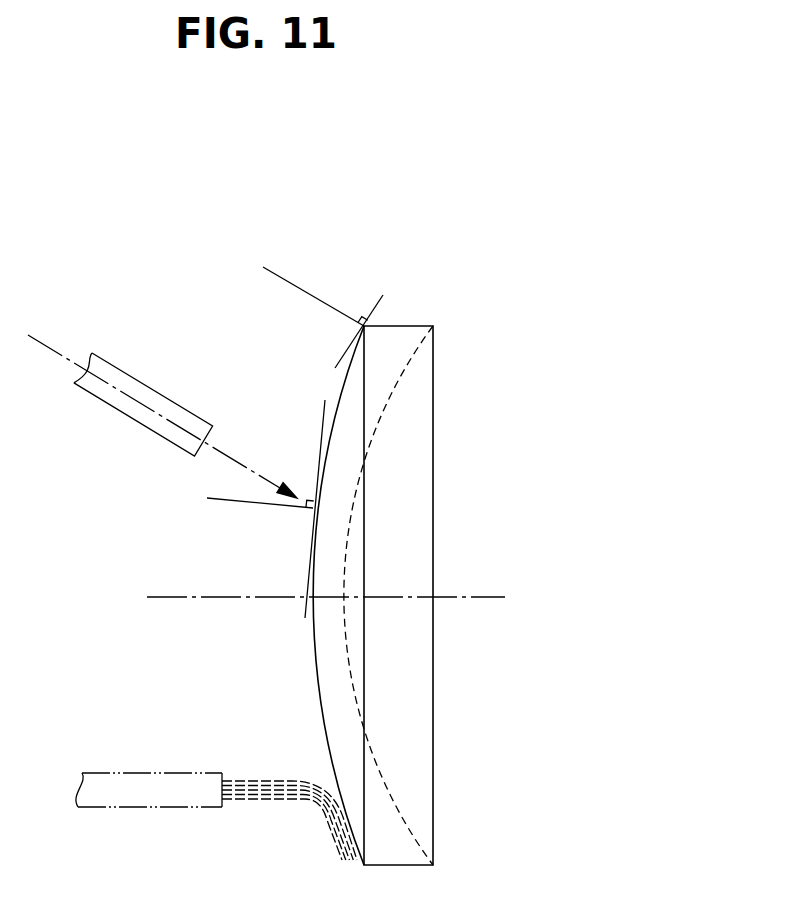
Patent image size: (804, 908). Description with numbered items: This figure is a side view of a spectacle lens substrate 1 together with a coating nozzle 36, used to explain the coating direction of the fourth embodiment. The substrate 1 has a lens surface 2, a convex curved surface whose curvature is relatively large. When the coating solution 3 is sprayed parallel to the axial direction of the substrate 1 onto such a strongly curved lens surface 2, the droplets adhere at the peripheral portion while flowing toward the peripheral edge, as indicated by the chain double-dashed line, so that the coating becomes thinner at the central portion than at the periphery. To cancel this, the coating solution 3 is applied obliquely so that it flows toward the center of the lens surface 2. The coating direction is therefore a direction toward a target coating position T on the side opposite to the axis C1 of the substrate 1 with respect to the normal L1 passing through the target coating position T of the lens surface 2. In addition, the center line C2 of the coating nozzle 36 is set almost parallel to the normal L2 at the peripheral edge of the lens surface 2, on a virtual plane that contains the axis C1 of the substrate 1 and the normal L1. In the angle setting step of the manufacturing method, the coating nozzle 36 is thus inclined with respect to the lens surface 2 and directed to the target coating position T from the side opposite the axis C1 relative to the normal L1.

The substrate 1 is at (433, 379).
The lens surface 2 is at (330, 685).
The coating solution 3 is at (333, 837).
The coating nozzle 36 is at (122, 415).
The axis of the substrate C1 is at (218, 597).
The center line of the coating nozzle C2 is at (247, 467).
The normal passing through the target coating position L1 is at (228, 502).
The normal at the peripheral edge of the lens surface L2 is at (302, 290).
The target coating position T is at (310, 512).